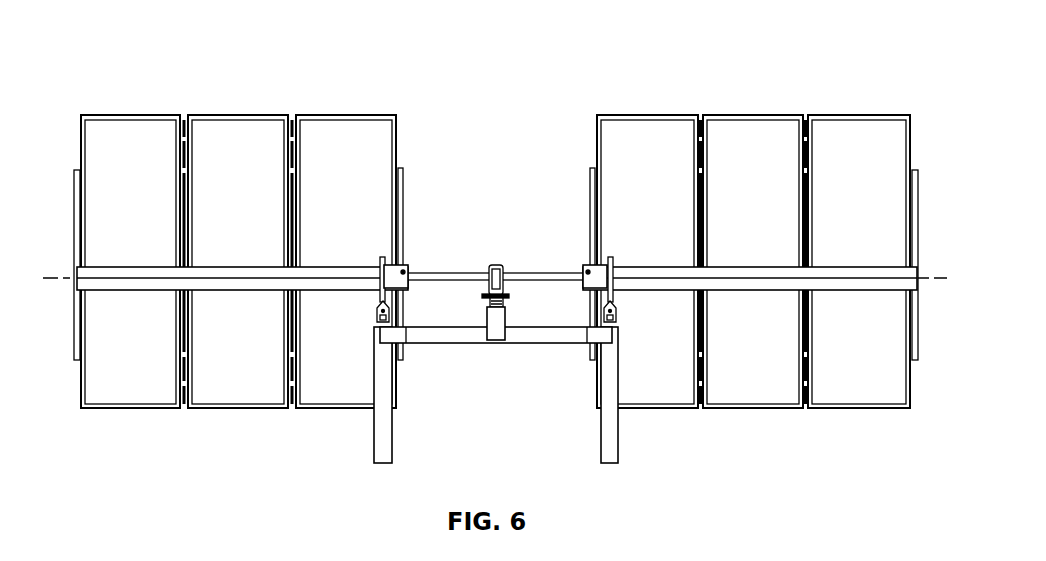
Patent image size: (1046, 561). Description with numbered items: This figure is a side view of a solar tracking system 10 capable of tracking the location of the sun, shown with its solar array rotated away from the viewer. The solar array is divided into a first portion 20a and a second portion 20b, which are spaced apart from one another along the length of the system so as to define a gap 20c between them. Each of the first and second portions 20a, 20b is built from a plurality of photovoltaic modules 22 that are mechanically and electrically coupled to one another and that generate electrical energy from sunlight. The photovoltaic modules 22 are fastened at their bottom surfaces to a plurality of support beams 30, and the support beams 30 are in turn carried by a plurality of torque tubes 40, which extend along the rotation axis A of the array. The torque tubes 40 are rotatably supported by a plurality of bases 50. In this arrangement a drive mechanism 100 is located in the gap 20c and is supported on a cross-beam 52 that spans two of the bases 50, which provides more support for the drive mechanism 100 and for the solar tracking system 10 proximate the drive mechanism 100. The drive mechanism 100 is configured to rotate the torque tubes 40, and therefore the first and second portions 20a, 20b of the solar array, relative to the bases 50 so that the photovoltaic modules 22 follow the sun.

The solar tracking system 10 is at (876, 70).
The first portion 20a is at (251, 86).
The second portion 20b is at (752, 86).
The gap 20c is at (489, 117).
The photovoltaic module 22 is at (160, 388).
The support beam 30 is at (917, 185).
The torque tube 40 is at (138, 292).
The base 50 is at (374, 440).
The cross-beam 52 is at (543, 336).
The drive mechanism 100 is at (464, 362).
The rotation axis A is at (72, 280).